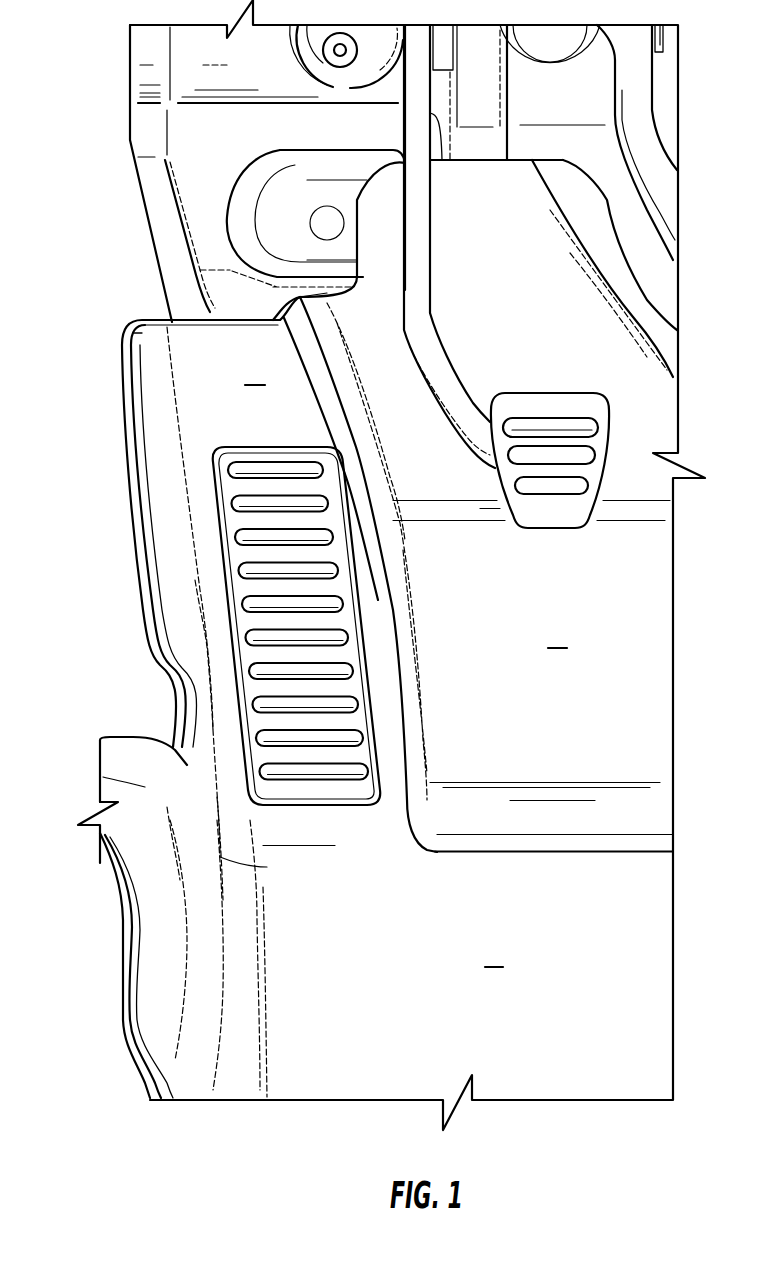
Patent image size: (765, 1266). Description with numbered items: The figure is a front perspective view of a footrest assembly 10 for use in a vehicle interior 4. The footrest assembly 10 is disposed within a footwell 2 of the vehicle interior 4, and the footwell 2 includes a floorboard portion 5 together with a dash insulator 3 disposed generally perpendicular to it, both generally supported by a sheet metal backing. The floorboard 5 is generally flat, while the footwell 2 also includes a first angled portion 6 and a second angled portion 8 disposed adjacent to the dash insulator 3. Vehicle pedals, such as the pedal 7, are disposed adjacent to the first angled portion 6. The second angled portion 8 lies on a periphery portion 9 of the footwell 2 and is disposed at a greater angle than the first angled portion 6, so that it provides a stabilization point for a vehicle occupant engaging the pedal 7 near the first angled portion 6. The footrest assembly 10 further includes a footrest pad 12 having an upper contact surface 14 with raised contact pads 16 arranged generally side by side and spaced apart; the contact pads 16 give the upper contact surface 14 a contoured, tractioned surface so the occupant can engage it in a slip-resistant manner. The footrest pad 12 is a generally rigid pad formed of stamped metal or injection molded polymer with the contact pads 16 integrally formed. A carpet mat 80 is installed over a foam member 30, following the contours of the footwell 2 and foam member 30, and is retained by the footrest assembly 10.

The footwell 2 is at (627, 700).
The dash insulator 3 is at (187, 132).
The vehicle interior 4 is at (562, 336).
The floorboard portion 5 is at (421, 958).
The first angled portion 6 is at (531, 651).
The pedal 7 is at (440, 360).
The second angled portion 8 is at (279, 575).
The periphery portion 9 is at (150, 452).
The footrest assembly 10 is at (207, 623).
The footrest pad 12 is at (248, 788).
The upper contact surface 14 is at (253, 732).
The raised contact pads 16 is at (340, 570).
The foam member 30 is at (128, 1058).
The carpet mat 80 is at (153, 905).